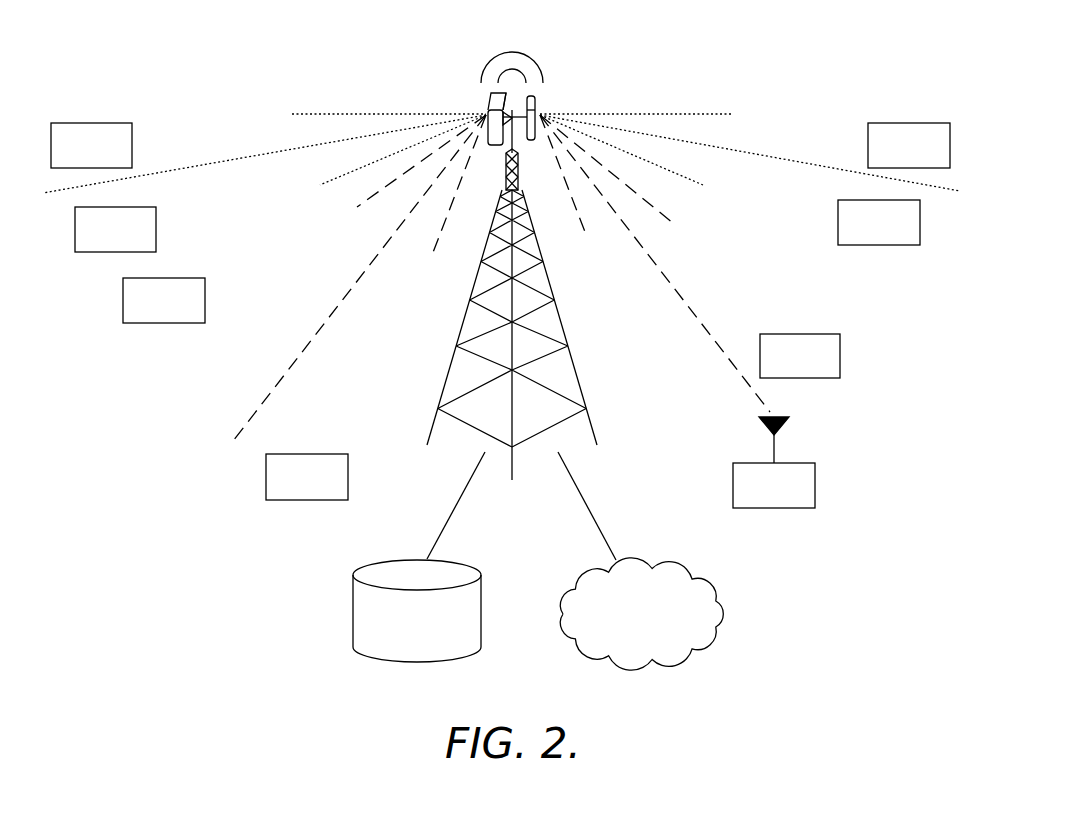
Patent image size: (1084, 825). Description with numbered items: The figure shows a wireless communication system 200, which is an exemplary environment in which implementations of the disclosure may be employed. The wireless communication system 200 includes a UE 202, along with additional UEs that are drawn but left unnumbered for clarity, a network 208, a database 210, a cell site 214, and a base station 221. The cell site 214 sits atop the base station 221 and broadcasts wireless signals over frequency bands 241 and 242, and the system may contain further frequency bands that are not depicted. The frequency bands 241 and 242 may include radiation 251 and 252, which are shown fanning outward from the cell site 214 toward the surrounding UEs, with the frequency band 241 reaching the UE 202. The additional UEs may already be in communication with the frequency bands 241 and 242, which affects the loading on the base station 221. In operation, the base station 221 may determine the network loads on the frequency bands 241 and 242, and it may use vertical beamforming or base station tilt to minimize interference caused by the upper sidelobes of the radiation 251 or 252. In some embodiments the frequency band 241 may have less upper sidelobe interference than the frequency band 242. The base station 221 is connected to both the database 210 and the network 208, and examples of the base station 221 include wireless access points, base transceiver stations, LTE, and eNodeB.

The wireless communication system 200 is at (784, 58).
The UE 202 is at (761, 502).
The network 208 is at (627, 634).
The database 210 is at (403, 644).
The cell site 214 is at (607, 74).
The base station 221 is at (600, 329).
The frequency band 241 is at (384, 332).
The frequency band 242 is at (229, 193).
The radiation 251 is at (356, 211).
The radiation 252 is at (368, 110).